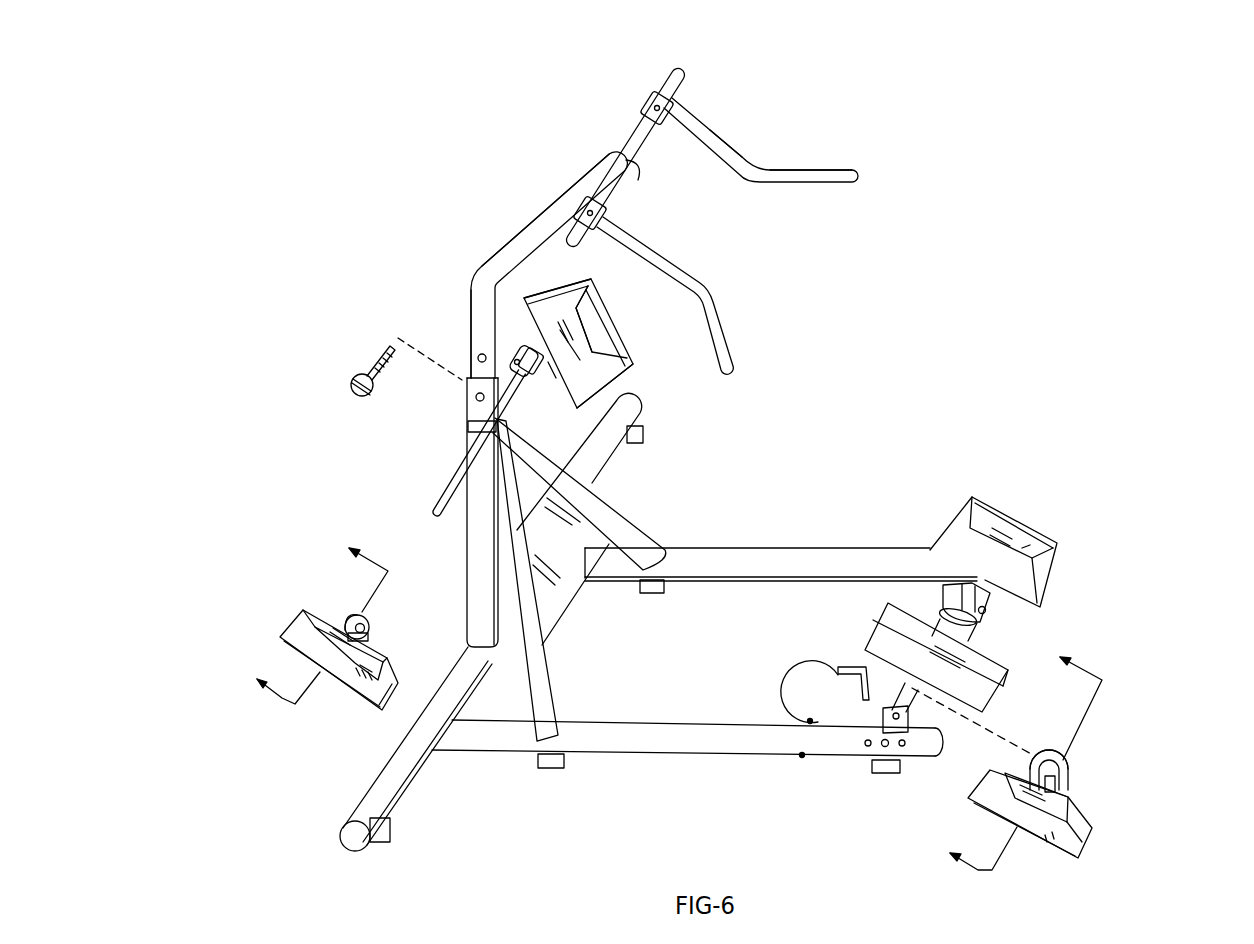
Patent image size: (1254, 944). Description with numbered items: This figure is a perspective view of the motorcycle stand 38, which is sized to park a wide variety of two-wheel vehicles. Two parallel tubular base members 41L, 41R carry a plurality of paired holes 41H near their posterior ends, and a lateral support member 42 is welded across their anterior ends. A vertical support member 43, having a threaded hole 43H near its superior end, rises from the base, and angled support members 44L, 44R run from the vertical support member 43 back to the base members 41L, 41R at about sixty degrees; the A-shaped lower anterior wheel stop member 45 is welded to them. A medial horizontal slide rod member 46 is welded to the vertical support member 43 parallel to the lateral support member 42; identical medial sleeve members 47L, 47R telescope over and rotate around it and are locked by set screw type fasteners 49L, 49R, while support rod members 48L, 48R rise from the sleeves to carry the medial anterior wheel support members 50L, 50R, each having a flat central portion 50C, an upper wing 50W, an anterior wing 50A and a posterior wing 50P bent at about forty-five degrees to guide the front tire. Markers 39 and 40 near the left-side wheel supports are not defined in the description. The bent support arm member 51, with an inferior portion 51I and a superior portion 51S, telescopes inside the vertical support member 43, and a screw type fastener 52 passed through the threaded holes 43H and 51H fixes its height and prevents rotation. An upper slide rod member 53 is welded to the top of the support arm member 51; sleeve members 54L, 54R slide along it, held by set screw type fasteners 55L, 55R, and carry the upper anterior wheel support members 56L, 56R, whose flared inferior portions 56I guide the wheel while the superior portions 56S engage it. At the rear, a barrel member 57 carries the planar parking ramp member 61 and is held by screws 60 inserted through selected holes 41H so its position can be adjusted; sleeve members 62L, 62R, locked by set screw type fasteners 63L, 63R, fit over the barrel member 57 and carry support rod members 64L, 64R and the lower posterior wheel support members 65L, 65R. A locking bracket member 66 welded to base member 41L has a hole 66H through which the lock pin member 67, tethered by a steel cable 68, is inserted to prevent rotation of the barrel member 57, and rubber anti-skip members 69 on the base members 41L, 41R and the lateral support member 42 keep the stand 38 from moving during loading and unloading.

The motorcycle stand 38 is at (781, 450).
The arm pad assembly 39 is at (304, 615).
The leg pad assembly 40 is at (1002, 756).
The paired holes 41H is at (864, 747).
The left base member 41L is at (677, 720).
The right base member 41R is at (787, 548).
The lateral support member 42 is at (360, 798).
The vertical support member 43 is at (465, 543).
The threaded hole 43H is at (476, 398).
The left angled support member 44L is at (553, 680).
The right angled support member 44R is at (650, 536).
The lower anterior wheel stop member 45 is at (571, 603).
The medial horizontal slide rod member 46 is at (452, 472).
The left medial sleeve member 47L is at (356, 614).
The right medial sleeve member 47R is at (525, 383).
The left support rod member 48L is at (344, 614).
The right support rod member 48R is at (537, 368).
The left set screw type fastener 49L is at (367, 627).
The right set screw type fastener 49R is at (514, 361).
The anterior wing 50A is at (558, 287).
The central portion 50C is at (583, 340).
The left medial anterior wheel support member 50L is at (357, 698).
The posterior wing 50P is at (627, 377).
The right medial anterior wheel support member 50R is at (632, 342).
The upper wing 50W is at (588, 305).
The support arm member 51 is at (465, 243).
The threaded holes 51H is at (478, 357).
The inferior portion 51I is at (468, 290).
The superior portion 51S is at (588, 170).
The screw type fastener 52 is at (377, 362).
The upper slide rod member 53 is at (668, 78).
The left sleeve member 54L is at (606, 212).
The right sleeve member 54R is at (672, 101).
The left set screw type fastener 55L is at (587, 212).
The right set screw type fastener 55R is at (654, 107).
The inferior portion 56I is at (717, 140).
The left upper anterior wheel support member 56L is at (720, 328).
The right upper anterior wheel support member 56R is at (845, 196).
The superior portion 56S is at (808, 170).
The barrel member 57 is at (942, 618).
The screws 60 is at (887, 760).
The planar parking ramp member 61 is at (880, 623).
The left sleeve member 62L is at (1068, 766).
The right sleeve member 62R is at (960, 593).
The left set screw type fastener 63L is at (1062, 756).
The right set screw type fastener 63R is at (988, 611).
The left support rod member 64L is at (1056, 781).
The right support rod member 64R is at (981, 596).
The left lower posterior wheel support member 65L is at (1088, 838).
The right lower posterior wheel support member 65R is at (1030, 526).
The locking bracket member 66 is at (905, 721).
The hole 66H is at (888, 710).
The lock pin member 67 is at (848, 667).
The steel cable 68 is at (783, 673).
The rubber anti-skip members 69 is at (644, 438).